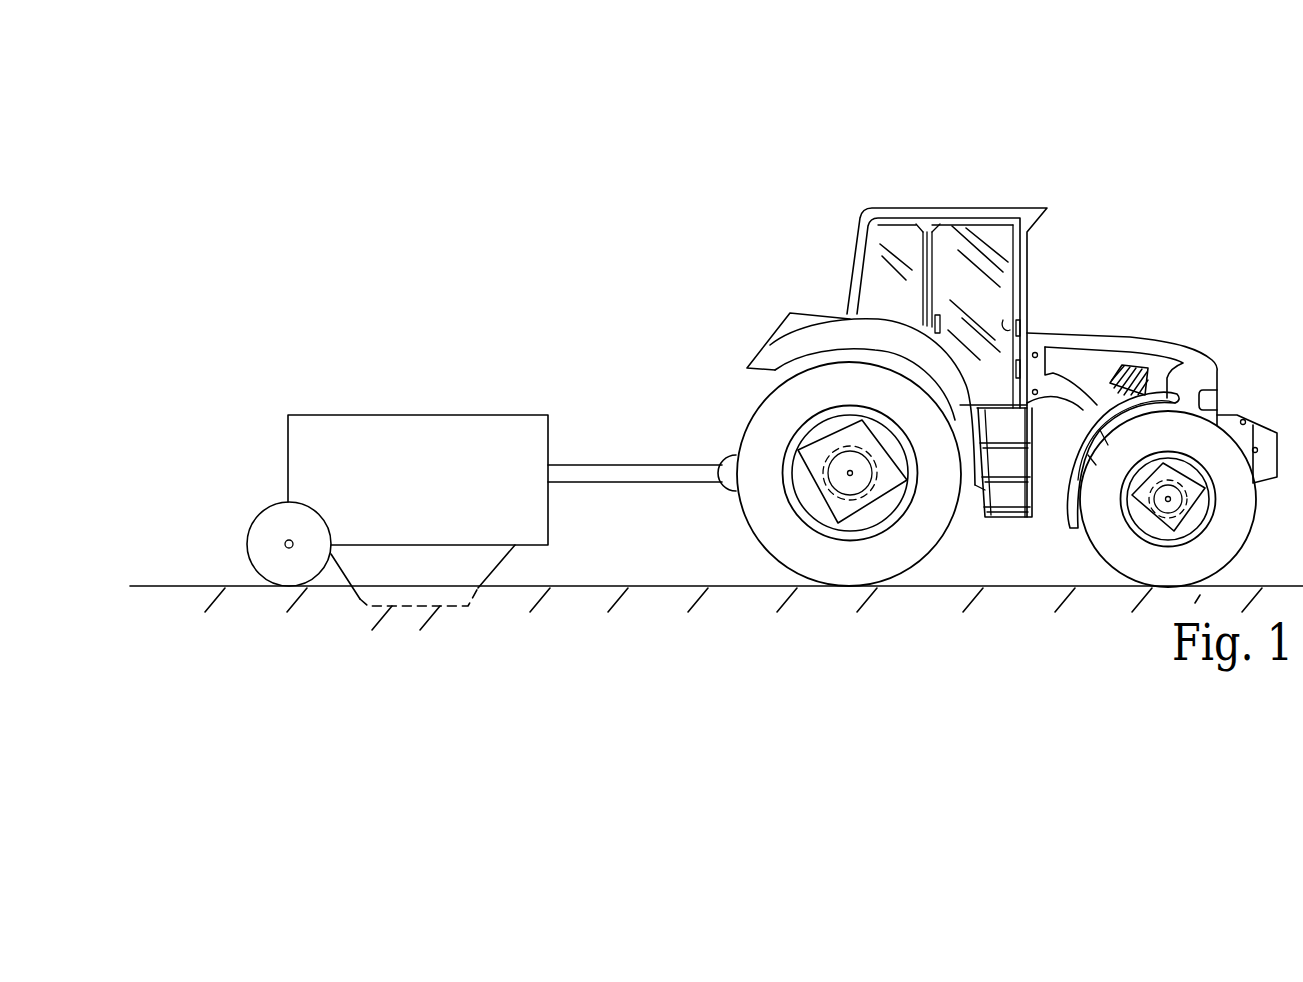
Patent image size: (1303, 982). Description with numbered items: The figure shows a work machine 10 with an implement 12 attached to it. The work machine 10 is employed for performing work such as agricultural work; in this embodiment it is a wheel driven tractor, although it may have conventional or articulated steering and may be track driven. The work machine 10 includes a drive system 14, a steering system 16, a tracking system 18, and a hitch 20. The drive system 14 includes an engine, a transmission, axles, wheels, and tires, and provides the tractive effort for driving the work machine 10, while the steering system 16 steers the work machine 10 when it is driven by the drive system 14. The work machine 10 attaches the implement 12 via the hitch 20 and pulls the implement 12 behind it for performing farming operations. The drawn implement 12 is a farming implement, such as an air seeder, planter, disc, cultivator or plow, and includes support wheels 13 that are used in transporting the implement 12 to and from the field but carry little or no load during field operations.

The work machine 10 is at (980, 319).
The implement 12 is at (449, 406).
The support wheels 13 is at (257, 515).
The drive system 14 is at (753, 405).
The steering system 16 is at (1220, 410).
The tracking system 18 is at (1003, 322).
The hitch 20 is at (730, 506).